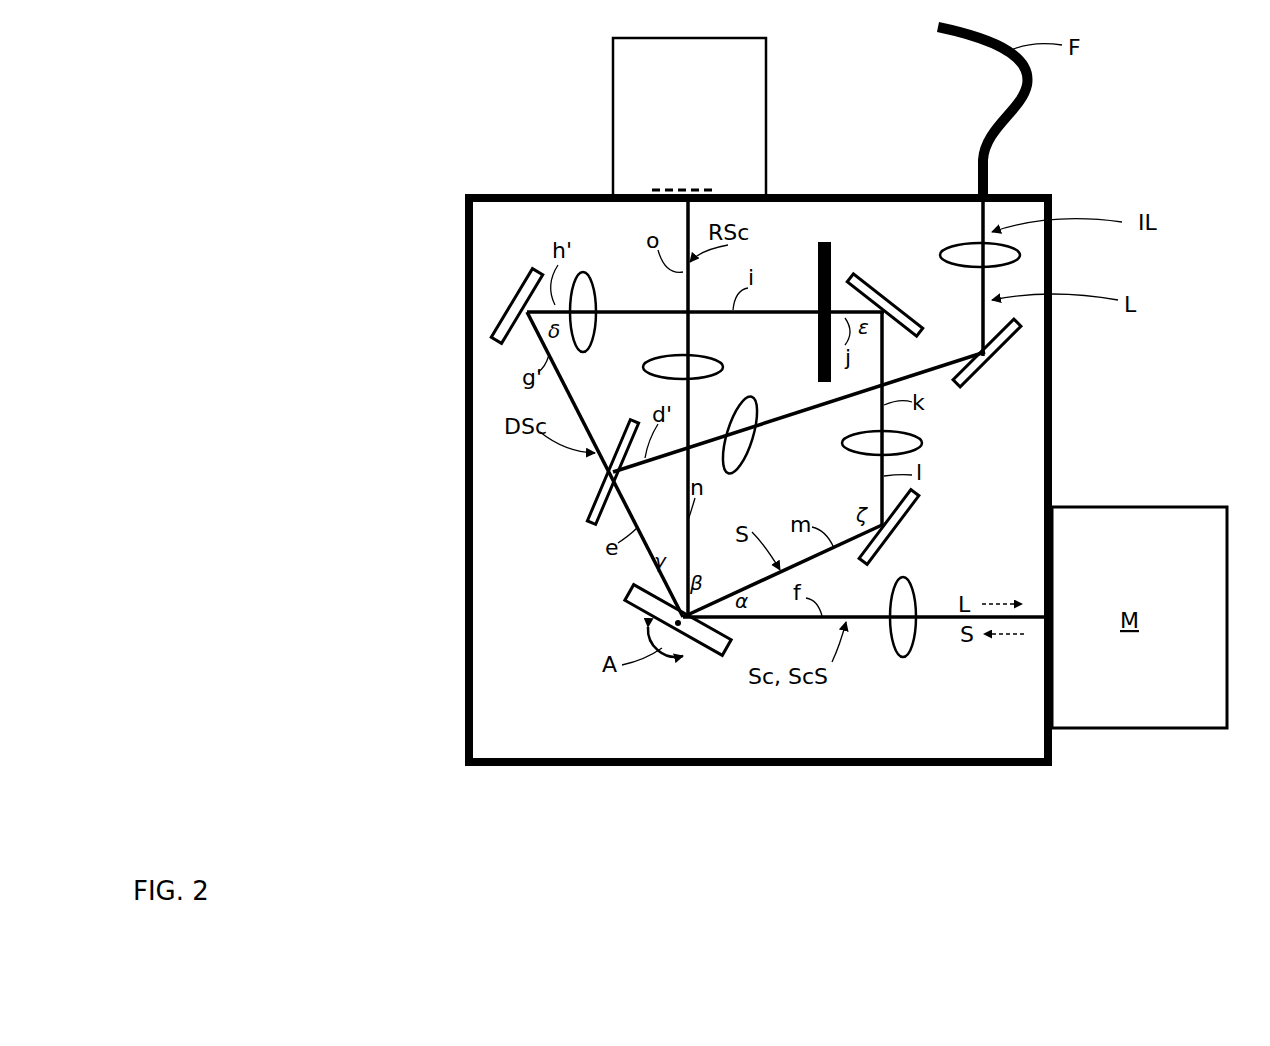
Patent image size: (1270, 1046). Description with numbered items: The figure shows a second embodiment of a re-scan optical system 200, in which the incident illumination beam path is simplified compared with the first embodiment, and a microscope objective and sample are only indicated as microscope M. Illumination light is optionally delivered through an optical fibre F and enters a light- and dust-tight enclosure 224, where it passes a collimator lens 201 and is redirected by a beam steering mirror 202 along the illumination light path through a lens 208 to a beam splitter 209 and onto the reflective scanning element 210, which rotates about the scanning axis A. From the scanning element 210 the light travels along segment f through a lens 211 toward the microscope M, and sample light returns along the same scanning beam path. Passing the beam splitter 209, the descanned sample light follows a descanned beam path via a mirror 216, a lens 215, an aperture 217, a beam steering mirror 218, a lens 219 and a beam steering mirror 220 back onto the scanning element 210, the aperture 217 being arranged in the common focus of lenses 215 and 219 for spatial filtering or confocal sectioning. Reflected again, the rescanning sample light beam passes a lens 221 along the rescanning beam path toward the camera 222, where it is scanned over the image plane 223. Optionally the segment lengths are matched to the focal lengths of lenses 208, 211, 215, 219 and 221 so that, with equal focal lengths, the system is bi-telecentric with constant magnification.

The re-scan optical system 200 is at (1182, 192).
The collimator lens 201 is at (995, 258).
The beam steering mirror 202 is at (1005, 335).
The lens 208 is at (742, 450).
The beam splitter 209 is at (598, 496).
The scanning element 210 is at (640, 598).
The lens 211 is at (906, 652).
The lens 215 is at (585, 295).
The mirror 216 is at (527, 297).
The aperture 217 is at (830, 275).
The beam steering mirror 218 is at (895, 305).
The lens 219 is at (922, 443).
The beam steering mirror 220 is at (905, 506).
The lens 221 is at (705, 368).
The camera 222 is at (613, 125).
The image plane 223 is at (688, 190).
The enclosure 224 is at (1053, 378).